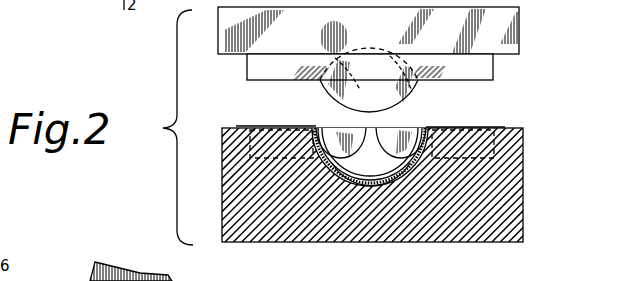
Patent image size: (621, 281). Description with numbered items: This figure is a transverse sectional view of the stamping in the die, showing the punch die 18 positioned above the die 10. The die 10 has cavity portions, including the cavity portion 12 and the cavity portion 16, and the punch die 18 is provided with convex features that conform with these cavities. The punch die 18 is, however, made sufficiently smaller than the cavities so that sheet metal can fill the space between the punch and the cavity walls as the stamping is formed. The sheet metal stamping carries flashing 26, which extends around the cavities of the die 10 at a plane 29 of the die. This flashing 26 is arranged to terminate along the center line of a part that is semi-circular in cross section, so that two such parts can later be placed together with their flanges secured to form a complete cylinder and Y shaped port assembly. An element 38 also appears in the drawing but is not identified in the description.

The die 10 is at (302, 242).
The cavity portion 12 is at (368, 170).
The cavity portion 16 is at (286, 128).
The punch die 18 is at (519, 30).
The flashing 26 is at (432, 128).
The plane 29 is at (228, 128).
The fragment element 38 is at (128, 253).